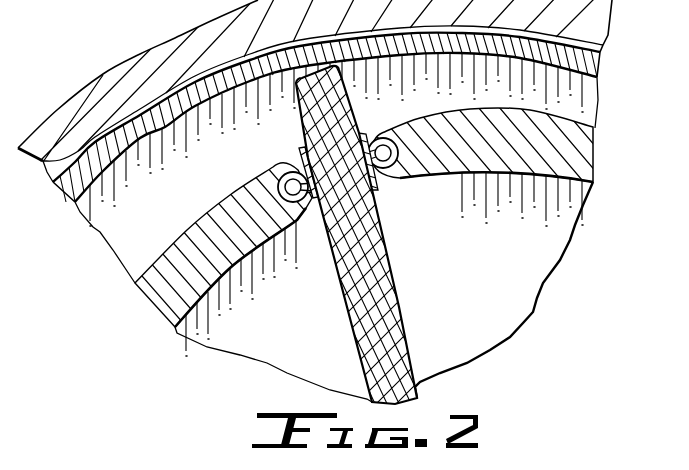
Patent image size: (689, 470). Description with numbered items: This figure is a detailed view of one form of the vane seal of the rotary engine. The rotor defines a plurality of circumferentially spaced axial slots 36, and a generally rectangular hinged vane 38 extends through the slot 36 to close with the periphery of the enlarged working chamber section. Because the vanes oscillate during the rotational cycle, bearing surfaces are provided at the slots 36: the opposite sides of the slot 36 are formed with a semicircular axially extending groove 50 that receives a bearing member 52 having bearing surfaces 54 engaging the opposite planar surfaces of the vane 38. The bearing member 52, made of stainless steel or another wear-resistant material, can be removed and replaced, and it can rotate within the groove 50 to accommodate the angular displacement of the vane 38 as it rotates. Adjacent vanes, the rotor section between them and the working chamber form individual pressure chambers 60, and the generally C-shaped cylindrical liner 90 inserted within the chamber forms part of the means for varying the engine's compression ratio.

The axial slot 36 is at (382, 128).
The hinged vane 38 is at (380, 266).
The groove 50 is at (399, 152).
The bearing member 52 is at (366, 125).
The bearing surface 54 is at (303, 172).
The pressure chamber 60 is at (191, 197).
The cylindrical liner 90 is at (326, 129).